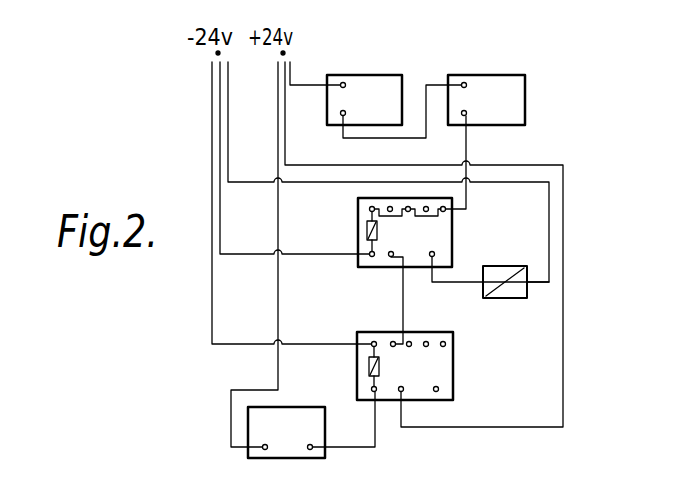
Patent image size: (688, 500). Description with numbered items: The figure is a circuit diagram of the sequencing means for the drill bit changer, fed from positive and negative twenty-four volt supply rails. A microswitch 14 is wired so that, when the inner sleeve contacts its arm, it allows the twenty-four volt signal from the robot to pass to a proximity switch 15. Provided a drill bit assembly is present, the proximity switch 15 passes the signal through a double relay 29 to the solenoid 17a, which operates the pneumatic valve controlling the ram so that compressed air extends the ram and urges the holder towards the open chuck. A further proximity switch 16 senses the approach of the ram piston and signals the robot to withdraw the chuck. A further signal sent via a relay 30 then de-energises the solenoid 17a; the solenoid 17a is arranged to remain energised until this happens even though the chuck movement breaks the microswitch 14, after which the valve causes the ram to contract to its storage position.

The microswitch 14 is at (367, 85).
The proximity switch 15 is at (486, 85).
The proximity switch 16 is at (285, 438).
The solenoid 17a is at (503, 290).
The double relay 29 is at (440, 237).
The relay 30 is at (440, 370).